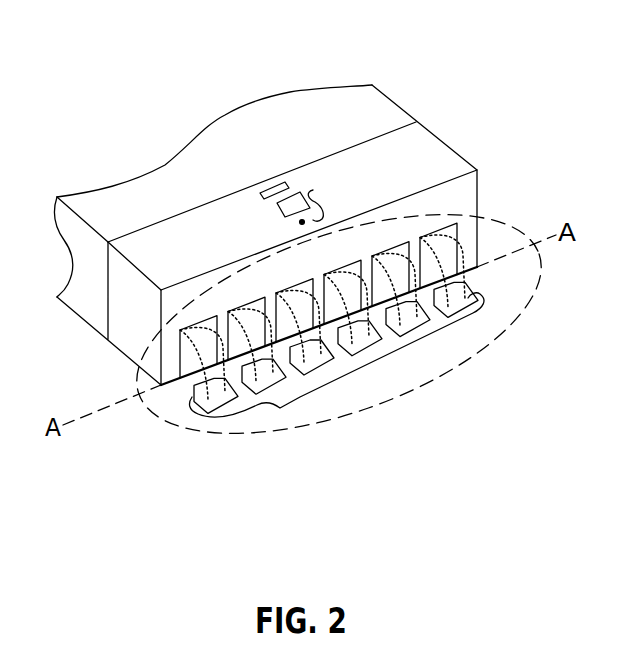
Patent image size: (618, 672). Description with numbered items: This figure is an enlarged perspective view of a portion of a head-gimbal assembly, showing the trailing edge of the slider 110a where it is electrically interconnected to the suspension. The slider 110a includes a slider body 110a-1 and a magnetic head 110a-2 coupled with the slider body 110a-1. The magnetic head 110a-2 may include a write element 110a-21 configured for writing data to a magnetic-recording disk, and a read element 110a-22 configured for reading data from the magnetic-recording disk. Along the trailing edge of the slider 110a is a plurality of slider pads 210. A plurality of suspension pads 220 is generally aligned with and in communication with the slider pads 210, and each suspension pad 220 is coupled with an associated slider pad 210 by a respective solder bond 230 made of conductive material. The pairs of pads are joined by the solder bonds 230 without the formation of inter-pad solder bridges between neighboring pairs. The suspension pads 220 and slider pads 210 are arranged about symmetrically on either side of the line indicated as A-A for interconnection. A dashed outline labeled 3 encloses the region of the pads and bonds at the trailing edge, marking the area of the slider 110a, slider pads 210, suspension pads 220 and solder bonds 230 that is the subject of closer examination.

The slider 110a is at (308, 207).
The slider body 110a-1 is at (371, 106).
The magnetic head 110a-2 is at (433, 164).
The write element 110a-21 is at (313, 190).
The read element 110a-22 is at (277, 183).
The slider pads 210 is at (176, 337).
The suspension pads 220 is at (278, 410).
The solder bonds 230 is at (197, 347).
The section region of FIG. 3 is at (517, 227).